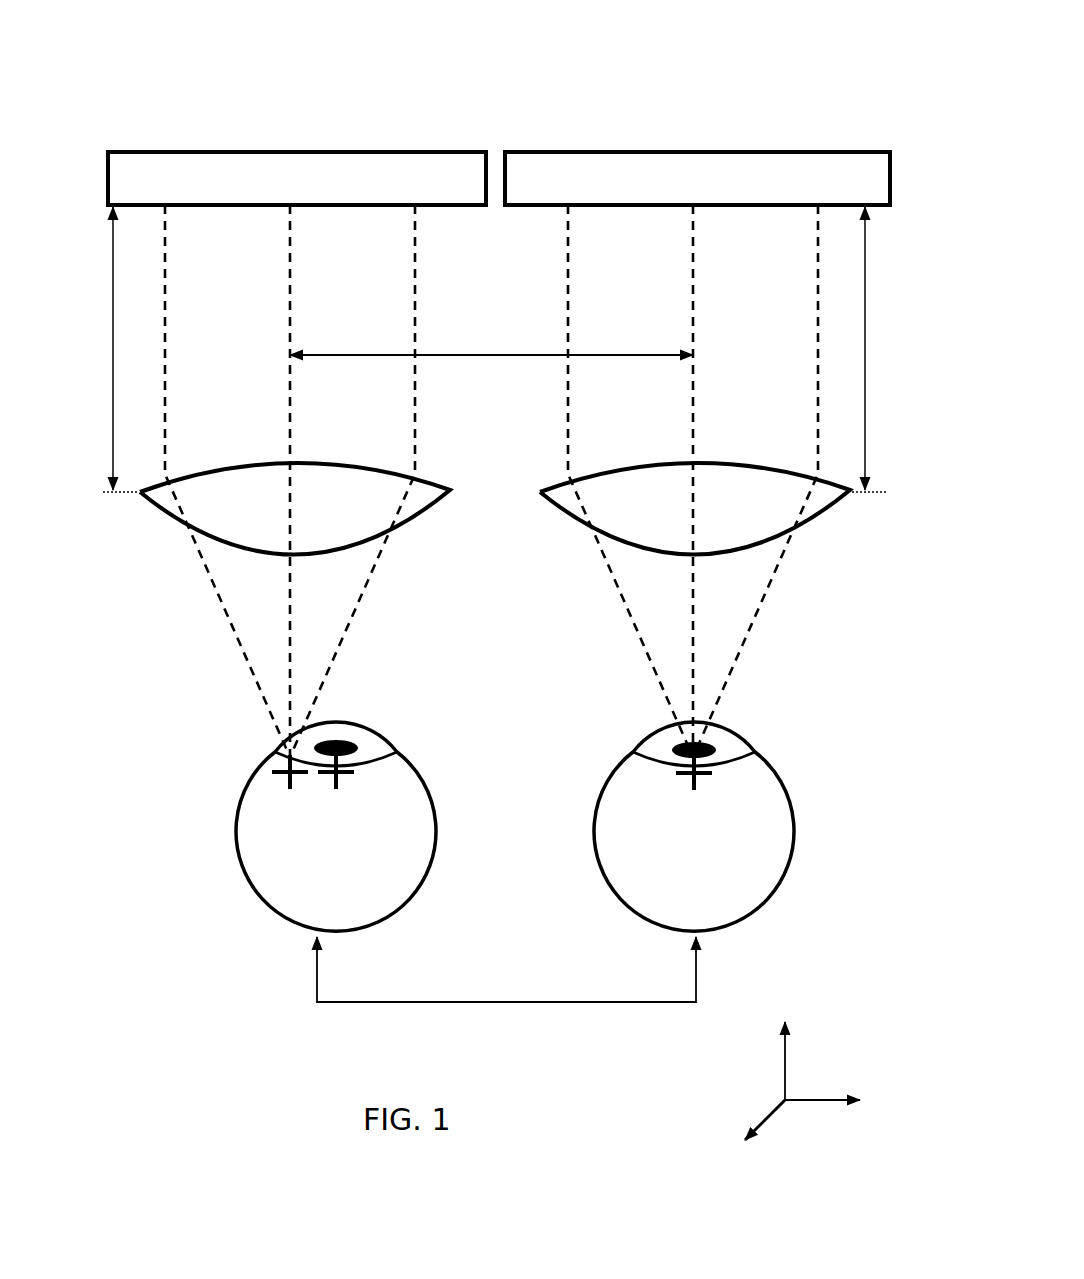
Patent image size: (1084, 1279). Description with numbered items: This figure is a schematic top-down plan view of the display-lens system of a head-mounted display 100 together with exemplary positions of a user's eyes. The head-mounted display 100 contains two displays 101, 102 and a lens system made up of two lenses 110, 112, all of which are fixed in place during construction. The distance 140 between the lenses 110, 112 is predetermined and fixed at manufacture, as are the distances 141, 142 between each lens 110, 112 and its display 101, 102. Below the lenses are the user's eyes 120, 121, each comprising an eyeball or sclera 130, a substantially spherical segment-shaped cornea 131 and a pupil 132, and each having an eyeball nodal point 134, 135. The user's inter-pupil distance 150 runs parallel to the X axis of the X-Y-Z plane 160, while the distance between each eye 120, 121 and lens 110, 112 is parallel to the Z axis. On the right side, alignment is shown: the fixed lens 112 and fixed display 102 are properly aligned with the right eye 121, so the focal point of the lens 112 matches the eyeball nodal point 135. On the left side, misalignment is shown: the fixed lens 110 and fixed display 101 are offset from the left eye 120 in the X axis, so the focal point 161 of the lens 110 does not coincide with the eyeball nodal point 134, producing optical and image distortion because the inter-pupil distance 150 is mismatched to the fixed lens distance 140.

The head-mounted display 100 is at (485, 72).
The display 101 is at (188, 150).
The display 102 is at (810, 150).
The lens 110 is at (430, 525).
The lens 112 is at (565, 527).
The eye 120 is at (327, 836).
The eye 121 is at (693, 822).
The sclera 130 is at (795, 802).
The cornea 131 is at (645, 742).
The pupil 132 is at (700, 740).
The eyeball nodal point 134 is at (341, 786).
The eyeball nodal point 135 is at (689, 786).
The distance between each lens 140 is at (525, 355).
The distance between lens and display 141 is at (113, 350).
The distance between lens and display 142 is at (865, 348).
The inter-pupil distance 150 is at (508, 1004).
The X-Y-Z plane 160 is at (805, 1082).
The focal point 161 is at (285, 786).